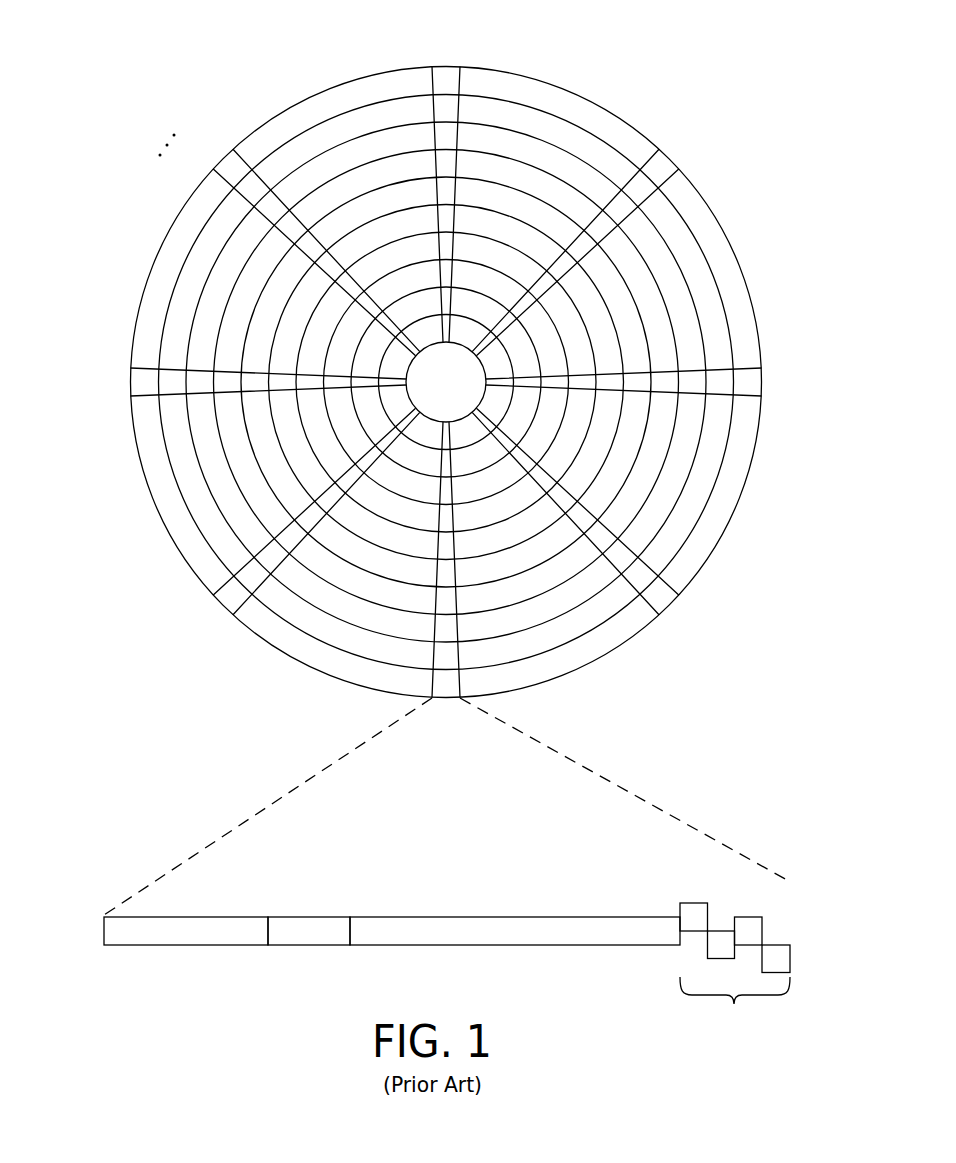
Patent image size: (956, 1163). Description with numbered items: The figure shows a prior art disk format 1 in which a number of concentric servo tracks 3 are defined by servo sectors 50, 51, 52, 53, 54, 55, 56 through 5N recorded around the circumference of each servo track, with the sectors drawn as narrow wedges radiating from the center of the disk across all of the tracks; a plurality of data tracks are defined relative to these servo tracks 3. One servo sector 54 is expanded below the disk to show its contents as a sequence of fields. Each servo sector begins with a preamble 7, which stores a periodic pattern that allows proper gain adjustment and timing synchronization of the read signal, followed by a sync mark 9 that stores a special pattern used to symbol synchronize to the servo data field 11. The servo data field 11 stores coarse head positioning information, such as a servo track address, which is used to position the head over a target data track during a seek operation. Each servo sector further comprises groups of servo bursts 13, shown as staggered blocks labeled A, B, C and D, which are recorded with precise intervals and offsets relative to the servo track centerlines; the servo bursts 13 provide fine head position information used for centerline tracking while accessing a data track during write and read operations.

The disk format 1 is at (213, 70).
The servo tracks 3 is at (575, 112).
The servo sector 50 is at (447, 78).
The servo sector 51 is at (662, 166).
The servo sector 52 is at (758, 383).
The servo sector 53 is at (662, 598).
The servo sector 54 is at (305, 772).
The servo sector 55 is at (228, 602).
The servo sector 56 is at (136, 383).
The servo sector 5N is at (228, 162).
The preamble 7 is at (167, 946).
The sync mark 9 is at (306, 946).
The servo data field 11 is at (504, 946).
The servo bursts 13 is at (668, 887).